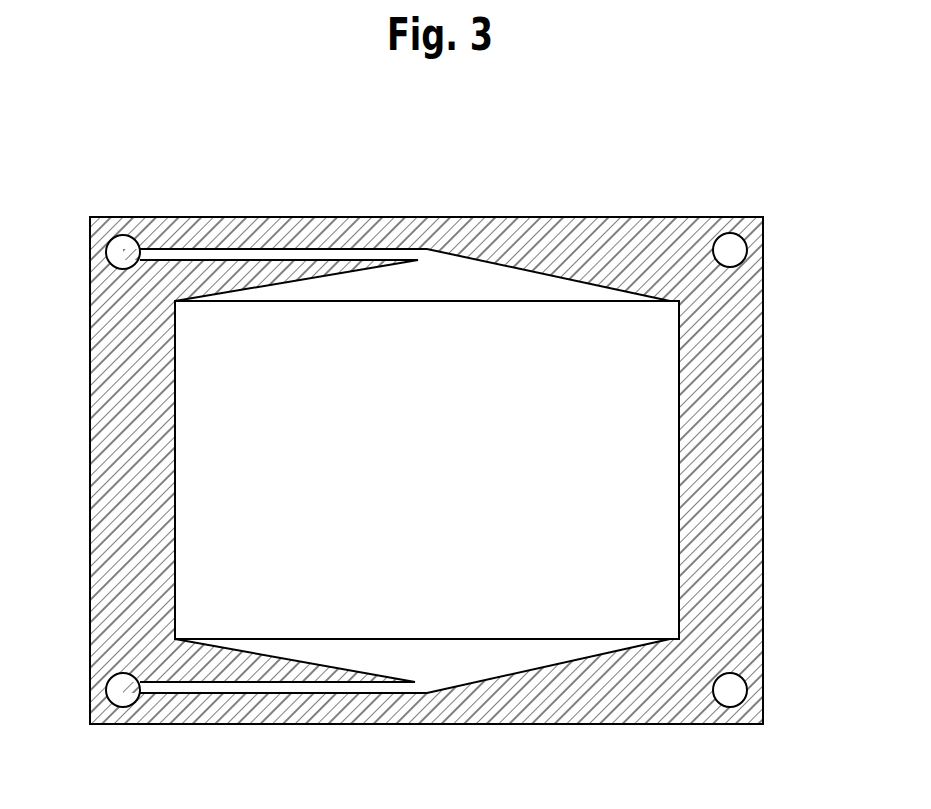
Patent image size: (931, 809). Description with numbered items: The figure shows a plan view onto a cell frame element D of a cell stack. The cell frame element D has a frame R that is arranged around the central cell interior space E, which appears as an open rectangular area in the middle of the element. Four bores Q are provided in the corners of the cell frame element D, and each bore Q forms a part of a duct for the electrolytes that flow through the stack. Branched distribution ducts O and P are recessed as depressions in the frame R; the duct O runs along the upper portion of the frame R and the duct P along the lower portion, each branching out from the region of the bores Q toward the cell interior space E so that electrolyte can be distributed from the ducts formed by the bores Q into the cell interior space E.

The bore Q is at (113, 240).
The frame R is at (327, 201).
The cell frame element D is at (600, 250).
The branched distribution duct O is at (429, 289).
The cell interior space E is at (437, 475).
The branched distribution duct P is at (410, 643).